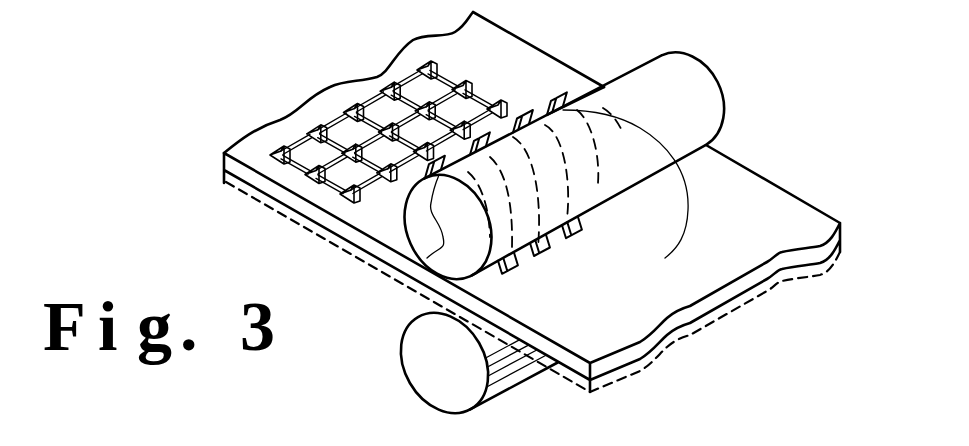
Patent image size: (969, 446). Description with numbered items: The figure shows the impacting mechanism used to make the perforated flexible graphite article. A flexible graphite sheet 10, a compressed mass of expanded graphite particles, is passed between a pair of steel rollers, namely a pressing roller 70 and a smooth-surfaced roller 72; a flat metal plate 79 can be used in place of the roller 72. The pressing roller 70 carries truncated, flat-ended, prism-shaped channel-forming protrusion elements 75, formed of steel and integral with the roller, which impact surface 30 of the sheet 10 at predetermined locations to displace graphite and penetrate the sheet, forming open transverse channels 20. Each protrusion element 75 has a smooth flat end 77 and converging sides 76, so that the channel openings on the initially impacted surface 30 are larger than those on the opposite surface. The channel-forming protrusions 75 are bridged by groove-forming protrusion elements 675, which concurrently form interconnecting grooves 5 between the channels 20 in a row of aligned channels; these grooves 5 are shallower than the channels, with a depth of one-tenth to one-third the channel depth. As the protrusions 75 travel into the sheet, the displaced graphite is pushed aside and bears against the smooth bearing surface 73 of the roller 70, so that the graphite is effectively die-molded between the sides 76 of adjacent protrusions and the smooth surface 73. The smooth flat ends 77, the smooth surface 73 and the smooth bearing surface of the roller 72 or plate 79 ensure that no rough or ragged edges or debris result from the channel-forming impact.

The grooves 5 is at (402, 79).
The flexible graphite sheet 10 is at (778, 182).
The channels 20 is at (350, 112).
The surface 30 is at (531, 75).
The pressing roller 70 is at (680, 73).
The roller 72 is at (427, 337).
The smooth bearing surface 73 is at (514, 130).
The channel-forming protrusion elements 75 is at (625, 197).
The sides 76 is at (564, 100).
The smooth flat ends 77 is at (426, 170).
The flat metal plate 79 is at (673, 330).
The groove-forming protrusion elements 675 is at (427, 258).